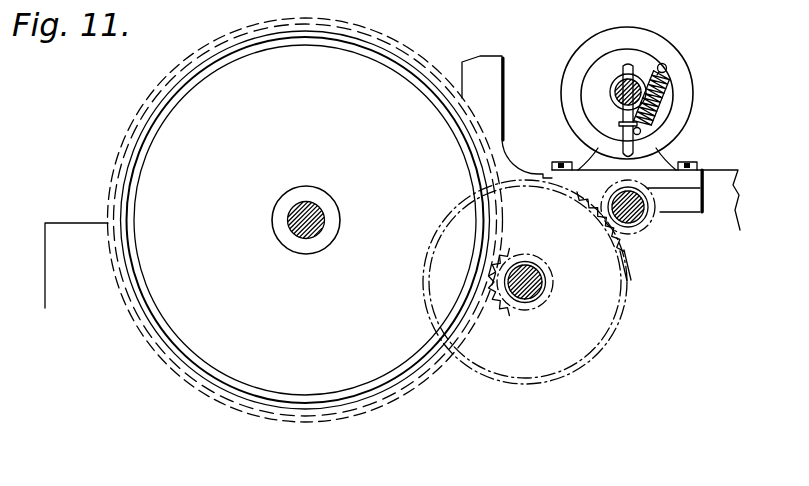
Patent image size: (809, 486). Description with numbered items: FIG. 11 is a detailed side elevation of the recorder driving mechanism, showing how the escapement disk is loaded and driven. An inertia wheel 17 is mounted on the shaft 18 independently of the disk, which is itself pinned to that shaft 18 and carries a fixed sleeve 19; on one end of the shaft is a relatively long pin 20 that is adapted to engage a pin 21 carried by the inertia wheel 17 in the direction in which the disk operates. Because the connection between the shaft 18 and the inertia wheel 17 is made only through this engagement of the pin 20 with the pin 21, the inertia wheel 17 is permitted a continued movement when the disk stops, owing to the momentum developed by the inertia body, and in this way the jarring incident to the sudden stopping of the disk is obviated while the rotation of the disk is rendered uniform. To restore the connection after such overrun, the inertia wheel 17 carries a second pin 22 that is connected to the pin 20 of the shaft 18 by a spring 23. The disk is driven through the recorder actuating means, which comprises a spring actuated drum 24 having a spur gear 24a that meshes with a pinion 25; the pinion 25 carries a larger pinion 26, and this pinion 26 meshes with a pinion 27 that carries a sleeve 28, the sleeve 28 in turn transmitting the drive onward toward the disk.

The inertia wheel 17 is at (636, 33).
The shaft 18 is at (617, 89).
The fixed sleeve 19 is at (623, 110).
The pin 20 is at (623, 139).
The pin 21 is at (641, 132).
The second pin 22 is at (666, 70).
The spring 23 is at (669, 88).
The spring actuated drum 24 is at (228, 365).
The spur gear 24a is at (355, 408).
The pinion 25 is at (517, 257).
The pinion 26 is at (616, 293).
The pinion 27 is at (626, 236).
The sleeve 28 is at (655, 213).